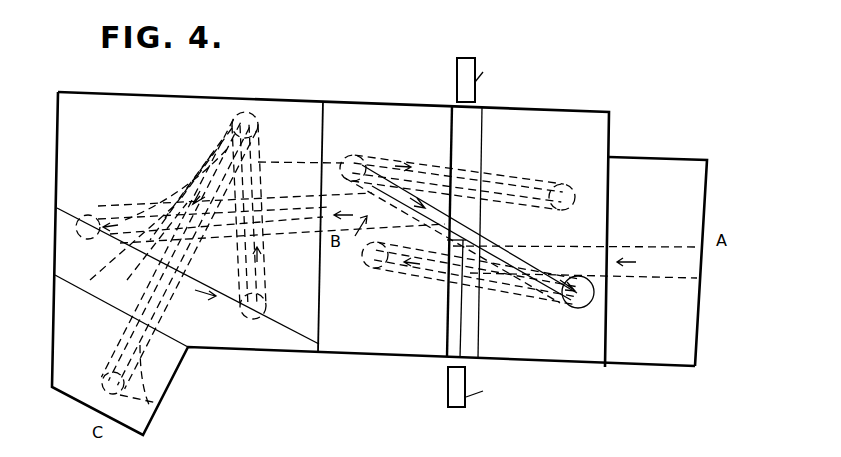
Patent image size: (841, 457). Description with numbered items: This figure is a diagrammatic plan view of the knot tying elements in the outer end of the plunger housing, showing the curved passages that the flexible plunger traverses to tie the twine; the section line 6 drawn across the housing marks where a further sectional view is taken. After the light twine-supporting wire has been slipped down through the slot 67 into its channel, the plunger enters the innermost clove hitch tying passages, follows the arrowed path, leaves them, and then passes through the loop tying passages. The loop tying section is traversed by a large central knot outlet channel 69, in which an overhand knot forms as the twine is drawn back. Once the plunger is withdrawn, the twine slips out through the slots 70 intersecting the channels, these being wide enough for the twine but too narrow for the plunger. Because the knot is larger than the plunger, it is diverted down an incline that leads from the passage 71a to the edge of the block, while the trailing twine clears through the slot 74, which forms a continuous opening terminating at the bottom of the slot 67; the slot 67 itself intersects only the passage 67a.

The section line / guide D 6 is at (465, 54).
The slot 67 is at (474, 335).
The passage 67a is at (477, 275).
The knot outlet channel 69 is at (291, 170).
The slots 70 is at (213, 165).
The passage 71a is at (381, 275).
The slot 74 is at (156, 401).